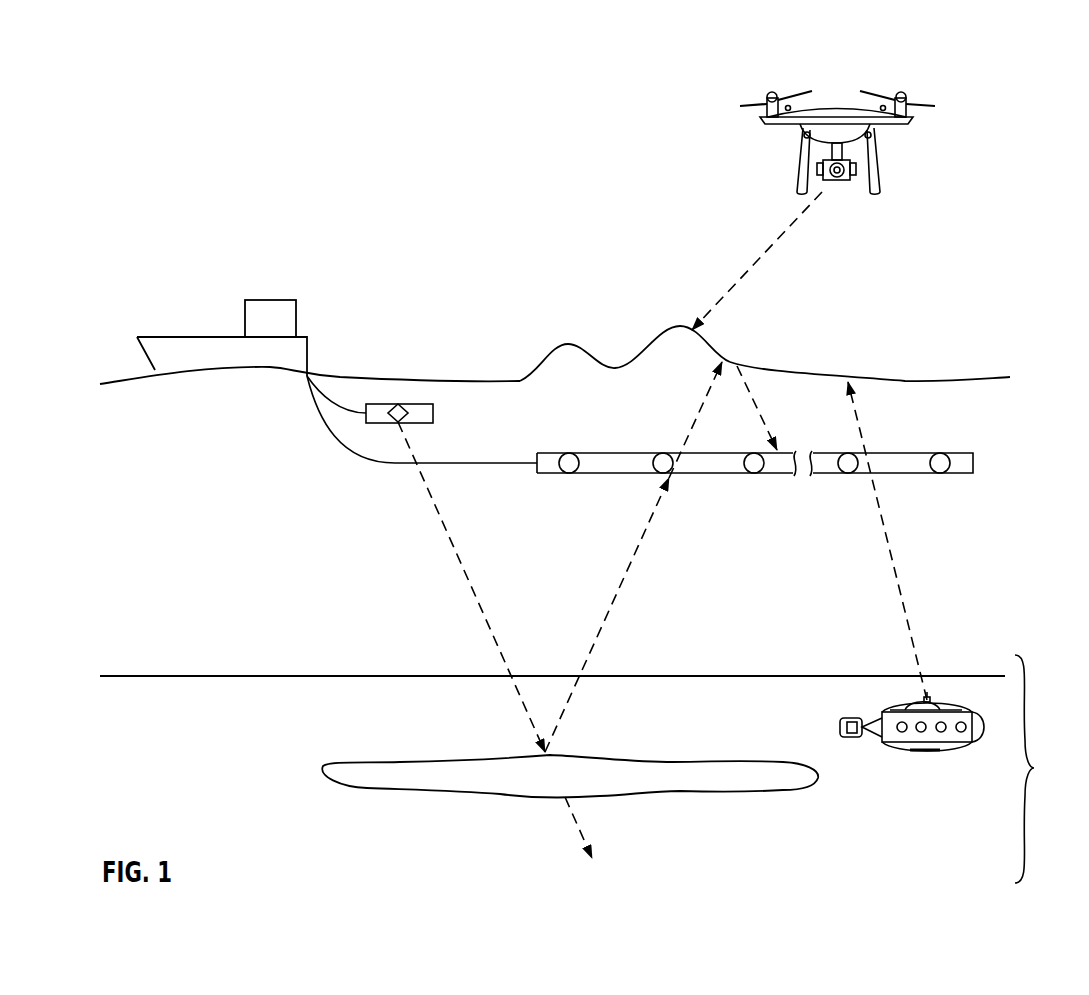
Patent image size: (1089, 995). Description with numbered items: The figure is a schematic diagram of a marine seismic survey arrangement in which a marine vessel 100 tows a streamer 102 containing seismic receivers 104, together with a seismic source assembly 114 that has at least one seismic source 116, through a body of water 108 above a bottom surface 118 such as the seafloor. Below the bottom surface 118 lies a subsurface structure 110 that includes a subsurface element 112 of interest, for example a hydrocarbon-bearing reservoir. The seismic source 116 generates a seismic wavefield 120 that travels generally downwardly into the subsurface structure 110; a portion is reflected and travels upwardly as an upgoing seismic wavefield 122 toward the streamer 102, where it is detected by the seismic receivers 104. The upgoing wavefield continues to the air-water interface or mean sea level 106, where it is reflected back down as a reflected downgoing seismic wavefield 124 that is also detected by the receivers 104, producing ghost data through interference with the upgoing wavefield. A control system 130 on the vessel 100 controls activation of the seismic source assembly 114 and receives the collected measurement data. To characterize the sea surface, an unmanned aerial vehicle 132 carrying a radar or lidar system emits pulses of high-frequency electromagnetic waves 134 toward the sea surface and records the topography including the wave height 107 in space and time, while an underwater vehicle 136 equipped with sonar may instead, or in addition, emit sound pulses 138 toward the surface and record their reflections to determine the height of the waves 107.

The marine vessel 100 is at (207, 335).
The streamer 102 is at (973, 462).
The seismic receivers 104 is at (567, 452).
The air-water interface/mean sea level 106 is at (895, 380).
The wave height 107 is at (567, 343).
The body of water 108 is at (237, 557).
The subsurface structure 110 is at (1050, 769).
The subsurface element 112 is at (752, 770).
The seismic source assembly 114 is at (433, 413).
The seismic source 116 is at (408, 405).
The bottom surface 118 is at (740, 676).
The seismic wavefield 120 is at (470, 584).
The upgoing seismic wavefield 122 is at (632, 573).
The reflected downgoing seismic wavefield 124 is at (763, 425).
The control system 130 is at (296, 318).
The unmanned aerial vehicle 132 is at (878, 162).
The high-frequency electromagnetic waves 134 is at (752, 264).
The underwater vehicle 136 is at (930, 733).
The sound pulses 138 is at (903, 598).